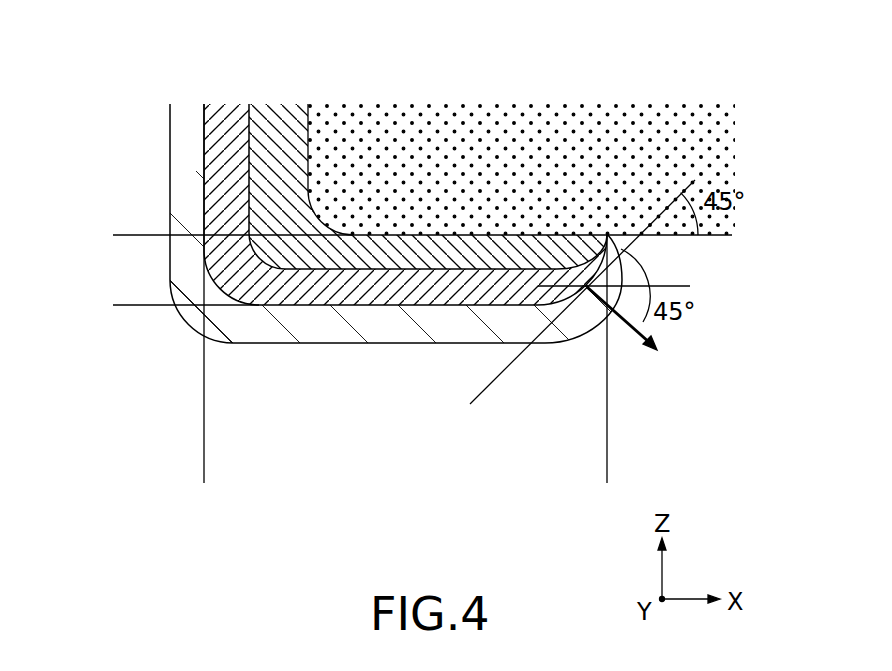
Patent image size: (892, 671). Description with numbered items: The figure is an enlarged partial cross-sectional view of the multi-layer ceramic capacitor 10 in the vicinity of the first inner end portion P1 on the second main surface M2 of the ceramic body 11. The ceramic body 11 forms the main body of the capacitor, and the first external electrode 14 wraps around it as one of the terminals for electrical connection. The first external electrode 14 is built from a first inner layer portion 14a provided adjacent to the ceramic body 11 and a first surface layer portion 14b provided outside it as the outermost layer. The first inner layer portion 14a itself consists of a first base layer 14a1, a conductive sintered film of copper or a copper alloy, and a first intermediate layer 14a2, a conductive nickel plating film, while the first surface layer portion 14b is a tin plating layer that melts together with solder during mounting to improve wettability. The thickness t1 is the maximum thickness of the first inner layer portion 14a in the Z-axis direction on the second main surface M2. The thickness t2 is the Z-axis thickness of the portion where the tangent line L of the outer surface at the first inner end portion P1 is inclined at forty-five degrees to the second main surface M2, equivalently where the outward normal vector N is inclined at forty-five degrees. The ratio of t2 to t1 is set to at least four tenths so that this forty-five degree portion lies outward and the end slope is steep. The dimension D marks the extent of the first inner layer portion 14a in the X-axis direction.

The multi-layer ceramic capacitor 10 is at (435, 285).
The ceramic body 11 is at (493, 178).
The first external electrode 14 is at (435, 335).
The first inner layer portion 14a is at (405, 271).
The first base layer 14a1 is at (445, 262).
The first intermediate layer 14a2 is at (455, 387).
The first surface layer portion 14b is at (257, 323).
The thickness t1 is at (129, 237).
The thickness t2 is at (678, 237).
The dimension D is at (605, 463).
The second main surface M2 is at (716, 238).
The tangent line L is at (573, 303).
The outward normal vector N is at (637, 336).
The first inner end portion P1 is at (580, 318).